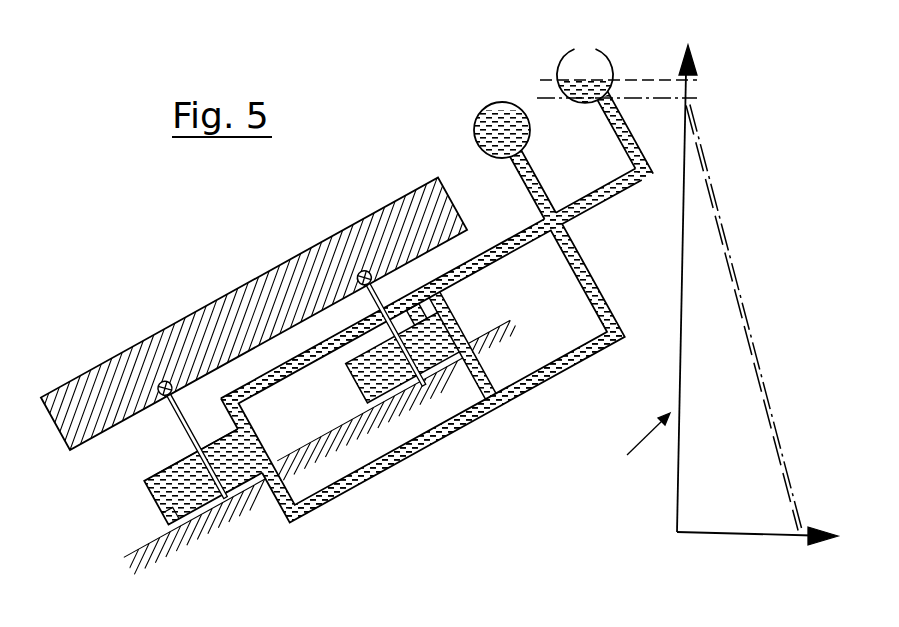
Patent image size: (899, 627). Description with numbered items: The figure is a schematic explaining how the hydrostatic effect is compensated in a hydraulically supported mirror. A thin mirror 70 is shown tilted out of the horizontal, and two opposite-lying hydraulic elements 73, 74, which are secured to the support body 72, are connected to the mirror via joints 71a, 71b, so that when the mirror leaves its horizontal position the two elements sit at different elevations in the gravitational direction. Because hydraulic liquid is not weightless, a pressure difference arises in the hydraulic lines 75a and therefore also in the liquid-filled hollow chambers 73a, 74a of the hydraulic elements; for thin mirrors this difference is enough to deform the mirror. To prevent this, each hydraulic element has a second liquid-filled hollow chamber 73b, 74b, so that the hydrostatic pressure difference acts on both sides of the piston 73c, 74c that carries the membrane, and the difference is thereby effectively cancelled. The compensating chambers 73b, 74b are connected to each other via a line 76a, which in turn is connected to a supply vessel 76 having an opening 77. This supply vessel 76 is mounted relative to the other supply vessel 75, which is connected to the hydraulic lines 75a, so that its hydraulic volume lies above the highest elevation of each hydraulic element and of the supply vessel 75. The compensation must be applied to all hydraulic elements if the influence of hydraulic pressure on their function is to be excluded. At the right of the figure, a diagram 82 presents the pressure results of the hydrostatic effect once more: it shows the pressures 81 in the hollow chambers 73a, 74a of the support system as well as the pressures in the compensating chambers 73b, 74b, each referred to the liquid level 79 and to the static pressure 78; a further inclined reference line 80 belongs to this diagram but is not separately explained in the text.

The mirror 70 is at (72, 388).
The joint 71a is at (158, 383).
The joint 71b is at (356, 273).
The support body 72 is at (322, 447).
The hydraulic element 73 is at (193, 510).
The liquid-filled hollow chamber 73a is at (163, 513).
The second liquid-filled hollow chamber 73b is at (170, 497).
The piston 73c is at (187, 458).
The hydraulic element 74 is at (348, 376).
The liquid-filled hollow chamber 74a is at (500, 365).
The second liquid-filled hollow chamber 74b is at (450, 317).
The piston 74c is at (465, 340).
The supply vessel 75 is at (470, 127).
The hydraulic lines 75a is at (400, 460).
The supply vessel 76 is at (603, 65).
The line 76a is at (493, 250).
The opening 77 is at (590, 52).
The static pressure 78 is at (748, 531).
The liquid level 79 is at (683, 240).
The inclined reference line 80 is at (763, 370).
The pressures 81 is at (755, 360).
The diagram 82 is at (631, 444).